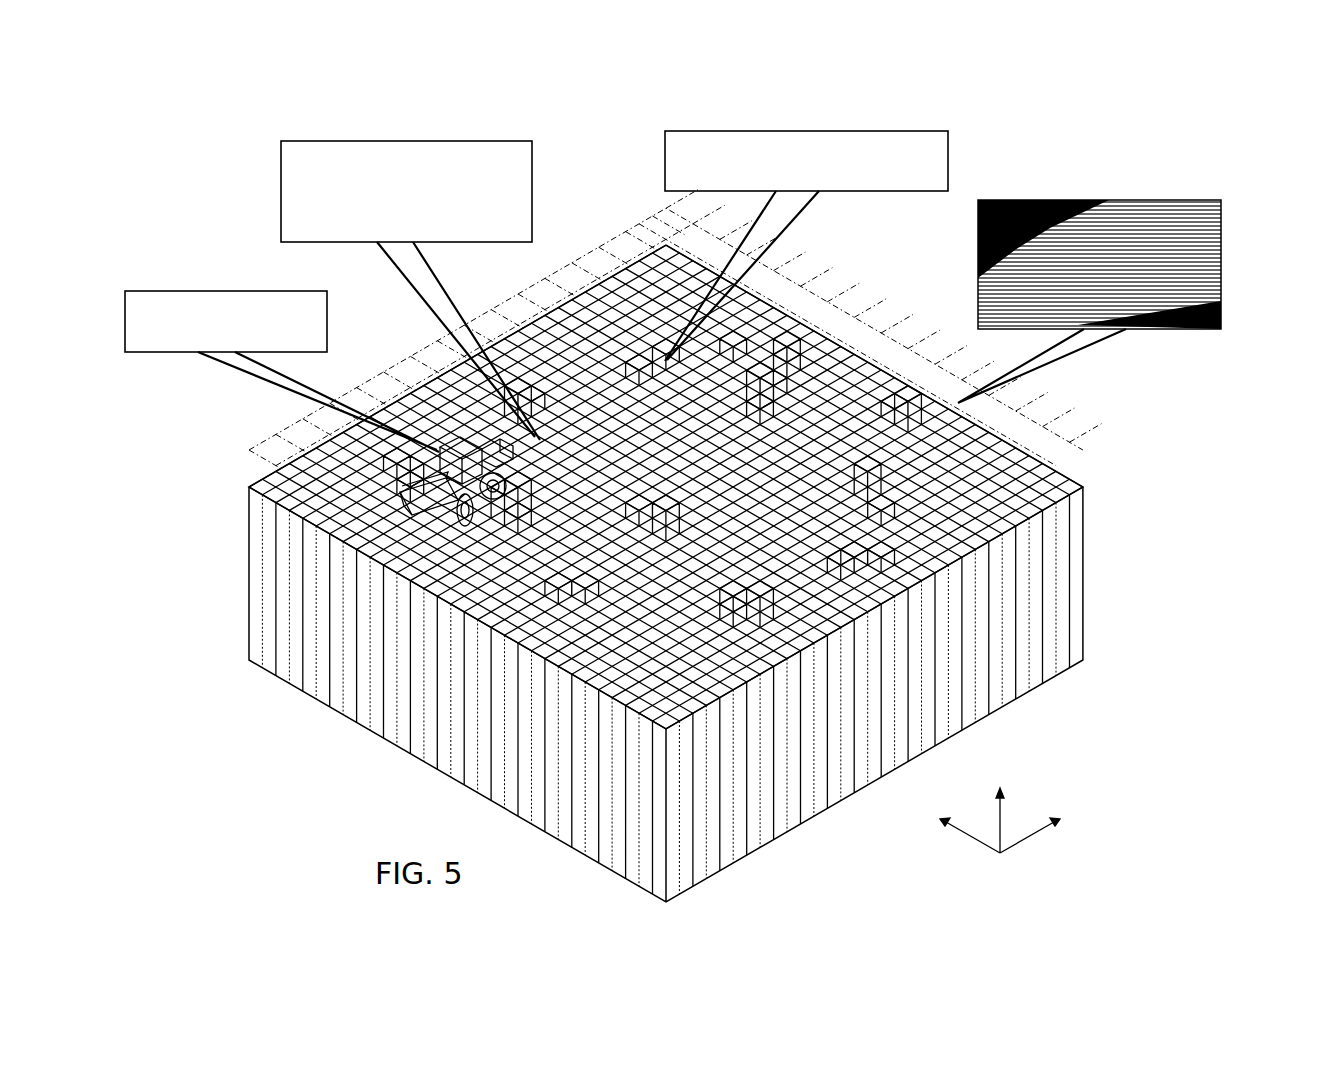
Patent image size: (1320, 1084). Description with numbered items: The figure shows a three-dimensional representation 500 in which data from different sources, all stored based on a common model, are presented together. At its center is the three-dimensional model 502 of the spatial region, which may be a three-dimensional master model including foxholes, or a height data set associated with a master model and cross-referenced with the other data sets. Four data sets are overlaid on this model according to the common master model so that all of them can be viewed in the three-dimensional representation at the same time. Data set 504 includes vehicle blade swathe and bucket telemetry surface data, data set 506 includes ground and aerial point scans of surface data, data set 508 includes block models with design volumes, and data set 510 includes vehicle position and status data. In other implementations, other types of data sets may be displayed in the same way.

The block model system 500 is at (272, 760).
The three-dimensional model 502 is at (240, 575).
The data set 504 is at (403, 140).
The data set 506 is at (806, 131).
The data set 508 is at (1222, 262).
The data set 510 is at (225, 290).